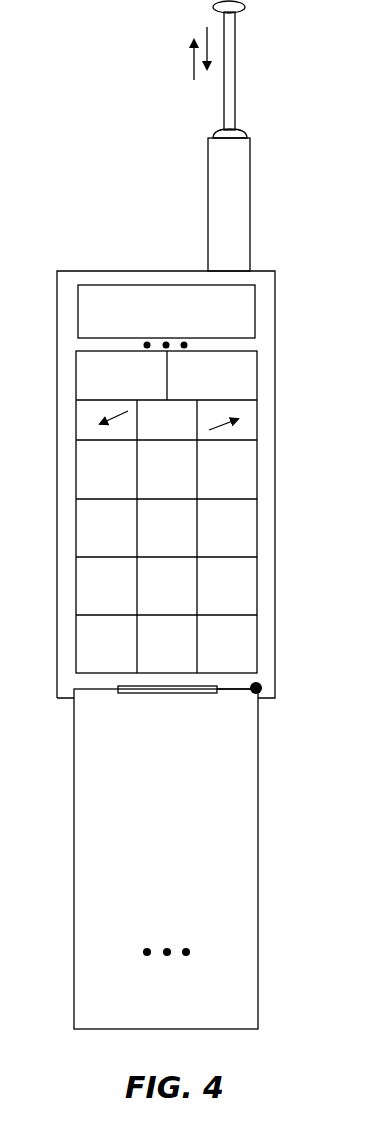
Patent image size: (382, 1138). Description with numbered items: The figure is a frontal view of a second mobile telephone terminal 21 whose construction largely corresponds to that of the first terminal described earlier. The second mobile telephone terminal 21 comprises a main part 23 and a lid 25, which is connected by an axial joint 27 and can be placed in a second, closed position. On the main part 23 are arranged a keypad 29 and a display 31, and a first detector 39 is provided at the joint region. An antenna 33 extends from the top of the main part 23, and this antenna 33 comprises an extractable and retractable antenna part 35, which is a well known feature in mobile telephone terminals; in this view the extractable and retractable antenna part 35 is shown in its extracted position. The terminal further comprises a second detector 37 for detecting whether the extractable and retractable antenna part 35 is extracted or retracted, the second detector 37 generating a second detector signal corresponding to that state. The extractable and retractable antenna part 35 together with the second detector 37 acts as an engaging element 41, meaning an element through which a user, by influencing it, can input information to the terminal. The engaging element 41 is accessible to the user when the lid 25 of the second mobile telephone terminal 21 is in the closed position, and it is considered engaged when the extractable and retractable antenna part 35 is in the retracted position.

The second mobile telephone terminal 21 is at (132, 225).
The main part 23 is at (276, 276).
The lid 25 is at (250, 928).
The axial joint 27 is at (162, 695).
The keypad 29 is at (257, 560).
The display 31 is at (250, 311).
The antenna 33 is at (250, 163).
The extractable and retractable antenna part 35 is at (246, 9).
The second detector 37 is at (246, 134).
The first detector 39 is at (262, 690).
The engaging element 41 is at (194, 102).